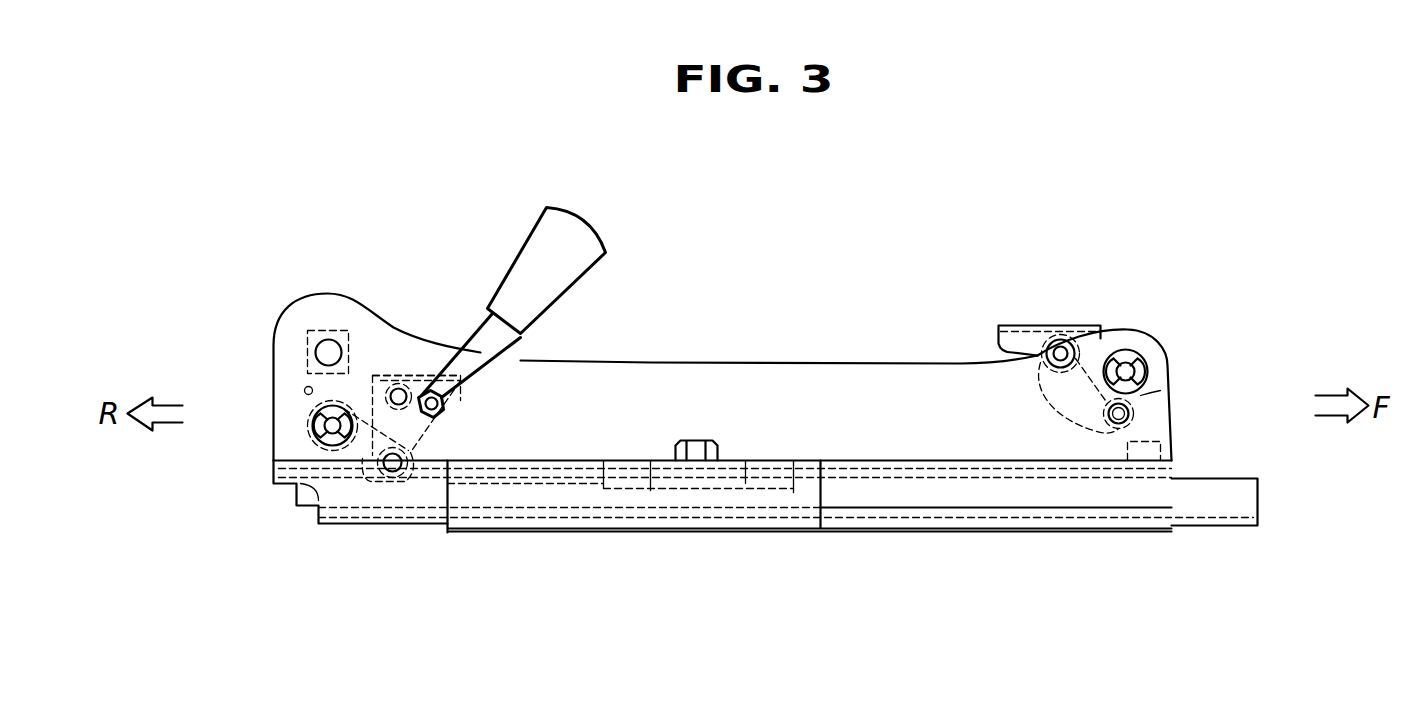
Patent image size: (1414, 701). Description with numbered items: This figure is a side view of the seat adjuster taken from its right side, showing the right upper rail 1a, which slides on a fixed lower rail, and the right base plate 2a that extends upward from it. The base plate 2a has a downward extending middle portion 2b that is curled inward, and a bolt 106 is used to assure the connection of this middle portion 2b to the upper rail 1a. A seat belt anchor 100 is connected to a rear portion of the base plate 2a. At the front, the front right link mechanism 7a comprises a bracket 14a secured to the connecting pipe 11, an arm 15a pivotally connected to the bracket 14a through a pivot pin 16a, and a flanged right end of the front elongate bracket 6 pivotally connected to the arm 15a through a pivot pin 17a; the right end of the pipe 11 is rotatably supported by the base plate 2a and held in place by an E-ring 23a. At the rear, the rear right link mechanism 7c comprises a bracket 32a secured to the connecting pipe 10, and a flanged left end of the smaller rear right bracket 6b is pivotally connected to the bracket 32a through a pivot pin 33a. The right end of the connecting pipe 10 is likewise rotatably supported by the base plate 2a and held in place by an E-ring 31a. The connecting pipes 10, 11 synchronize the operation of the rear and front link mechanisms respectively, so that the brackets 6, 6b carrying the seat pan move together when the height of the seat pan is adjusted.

The right upper rail 1a is at (1208, 507).
The right base plate 2a is at (846, 378).
The middle portion of base plate 2b is at (823, 497).
The front elongate bracket 6 is at (1040, 324).
The rear right bracket 6b is at (450, 392).
The front right link mechanism 7a is at (1175, 340).
The rear right link mechanism 7c is at (293, 403).
The connecting pipe 10 is at (334, 418).
The connecting pipe 11 is at (1127, 352).
The bracket 14a is at (1135, 405).
The arm 15a is at (1055, 401).
The pivot pin 16a is at (1133, 413).
The pivot pin 17a is at (1061, 350).
The E-ring 23a is at (1147, 360).
The E-ring 31a is at (309, 425).
The bracket 32a is at (350, 468).
The pivot pin 33a is at (400, 385).
The seat belt anchor 100 is at (507, 348).
The fixing bolt 106 is at (701, 438).